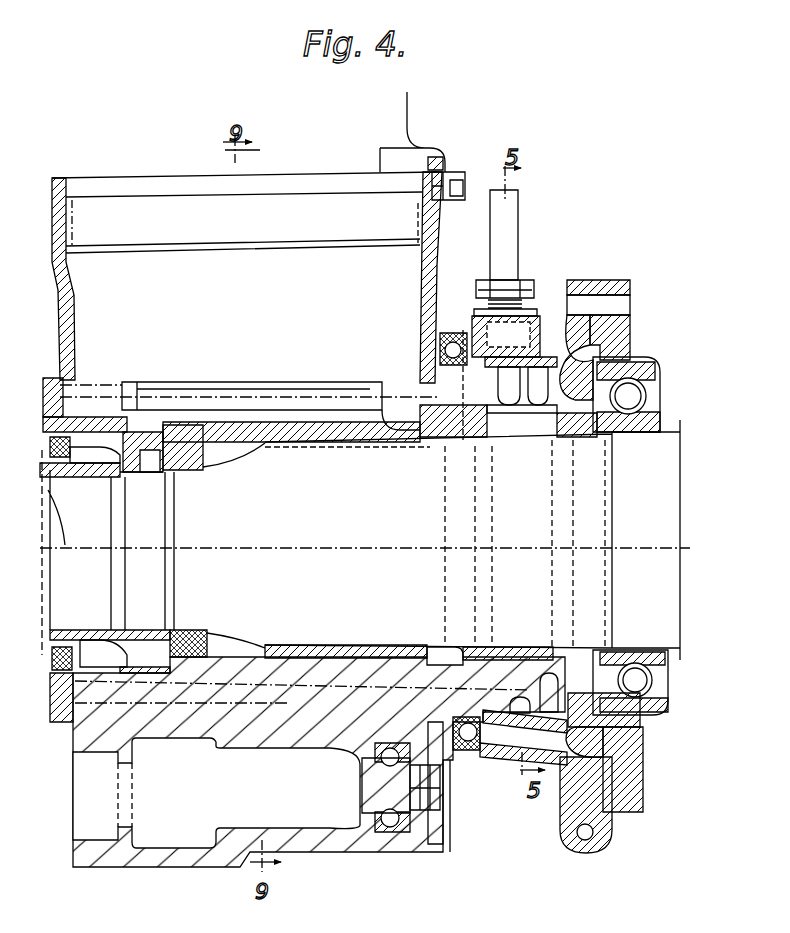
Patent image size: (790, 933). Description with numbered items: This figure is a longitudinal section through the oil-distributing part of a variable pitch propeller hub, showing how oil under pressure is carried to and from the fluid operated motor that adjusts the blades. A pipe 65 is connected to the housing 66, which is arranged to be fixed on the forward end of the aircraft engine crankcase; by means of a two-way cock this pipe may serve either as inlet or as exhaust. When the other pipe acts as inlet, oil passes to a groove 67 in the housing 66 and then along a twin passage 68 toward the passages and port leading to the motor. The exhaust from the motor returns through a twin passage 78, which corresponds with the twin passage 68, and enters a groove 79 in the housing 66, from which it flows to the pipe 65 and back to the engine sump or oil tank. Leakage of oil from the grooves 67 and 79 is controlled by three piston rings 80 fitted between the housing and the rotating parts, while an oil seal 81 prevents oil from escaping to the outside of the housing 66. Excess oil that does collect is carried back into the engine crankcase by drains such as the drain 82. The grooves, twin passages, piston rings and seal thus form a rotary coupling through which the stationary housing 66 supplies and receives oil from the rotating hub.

The pipe 65 is at (506, 237).
The housing 66 is at (580, 313).
The groove 67 is at (536, 400).
The twin passage 68 is at (306, 688).
The twin passage 78 is at (325, 405).
The groove 79 is at (512, 400).
The piston rings 80 is at (533, 368).
The oil seal 81 is at (453, 343).
The drain 82 is at (512, 737).